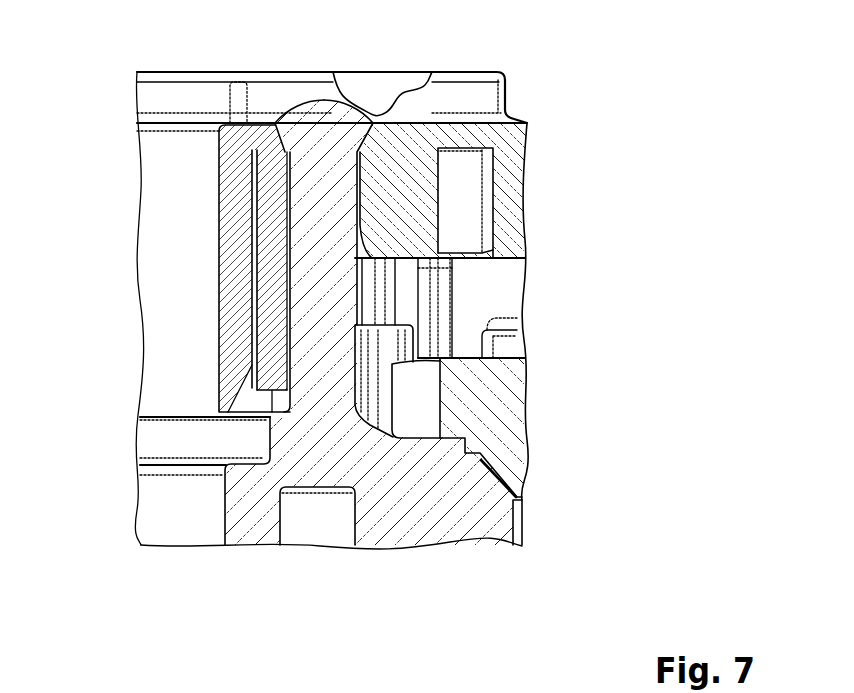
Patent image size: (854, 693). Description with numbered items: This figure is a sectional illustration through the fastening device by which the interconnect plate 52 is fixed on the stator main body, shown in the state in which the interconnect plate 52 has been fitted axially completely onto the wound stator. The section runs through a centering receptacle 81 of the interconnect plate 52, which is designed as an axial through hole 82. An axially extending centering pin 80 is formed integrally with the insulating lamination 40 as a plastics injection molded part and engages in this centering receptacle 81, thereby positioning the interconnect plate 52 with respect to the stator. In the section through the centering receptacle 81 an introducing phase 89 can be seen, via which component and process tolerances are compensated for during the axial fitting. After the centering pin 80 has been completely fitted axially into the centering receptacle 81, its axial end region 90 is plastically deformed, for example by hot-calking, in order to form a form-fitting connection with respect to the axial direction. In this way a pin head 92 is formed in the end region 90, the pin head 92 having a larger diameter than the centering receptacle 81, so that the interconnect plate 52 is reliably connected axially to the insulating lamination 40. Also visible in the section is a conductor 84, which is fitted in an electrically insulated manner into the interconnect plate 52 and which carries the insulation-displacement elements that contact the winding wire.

The insulating lamination 40 is at (445, 505).
The interconnect plate 52 is at (468, 136).
The centering pin 80 is at (325, 217).
The centering receptacle 81 is at (254, 270).
The axial through hole 82 is at (290, 183).
The conductor 84 is at (470, 187).
The introducing phase 89 is at (377, 245).
The axial end region 90 is at (298, 128).
The pin head 92 is at (345, 125).